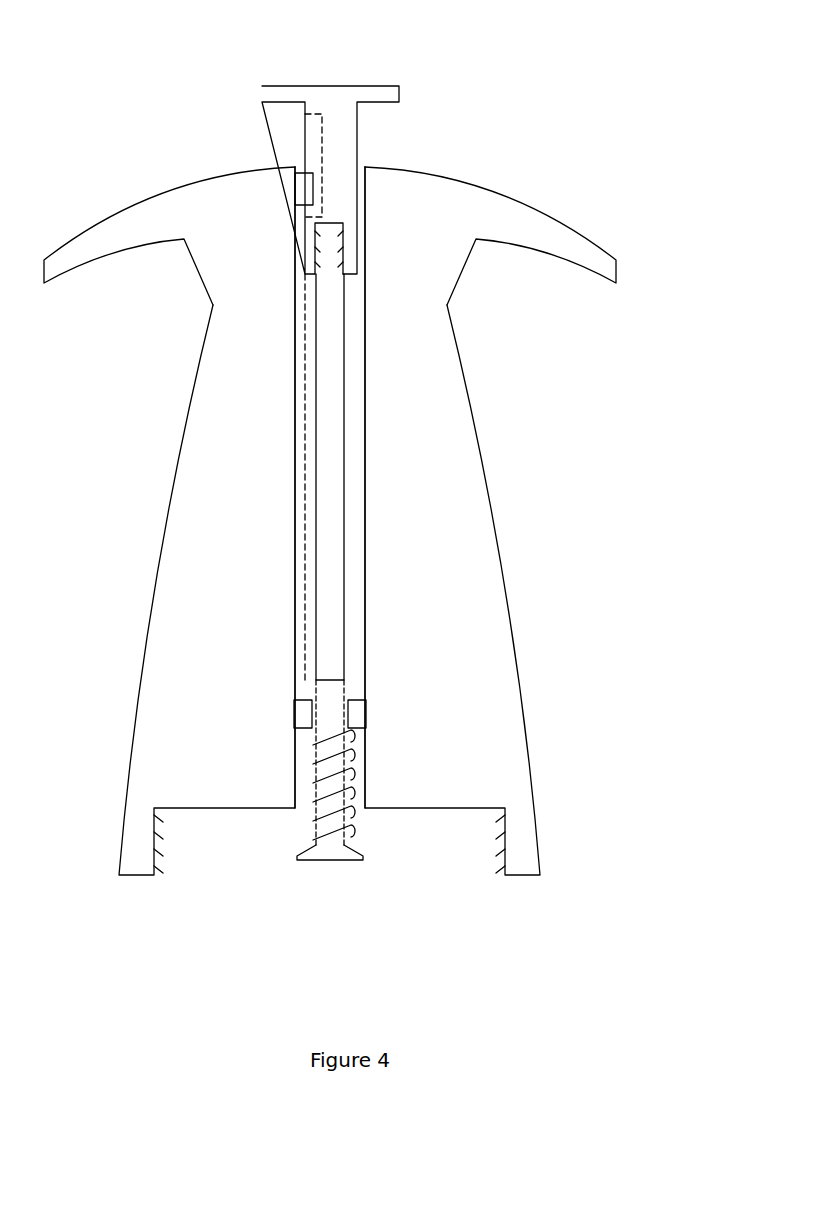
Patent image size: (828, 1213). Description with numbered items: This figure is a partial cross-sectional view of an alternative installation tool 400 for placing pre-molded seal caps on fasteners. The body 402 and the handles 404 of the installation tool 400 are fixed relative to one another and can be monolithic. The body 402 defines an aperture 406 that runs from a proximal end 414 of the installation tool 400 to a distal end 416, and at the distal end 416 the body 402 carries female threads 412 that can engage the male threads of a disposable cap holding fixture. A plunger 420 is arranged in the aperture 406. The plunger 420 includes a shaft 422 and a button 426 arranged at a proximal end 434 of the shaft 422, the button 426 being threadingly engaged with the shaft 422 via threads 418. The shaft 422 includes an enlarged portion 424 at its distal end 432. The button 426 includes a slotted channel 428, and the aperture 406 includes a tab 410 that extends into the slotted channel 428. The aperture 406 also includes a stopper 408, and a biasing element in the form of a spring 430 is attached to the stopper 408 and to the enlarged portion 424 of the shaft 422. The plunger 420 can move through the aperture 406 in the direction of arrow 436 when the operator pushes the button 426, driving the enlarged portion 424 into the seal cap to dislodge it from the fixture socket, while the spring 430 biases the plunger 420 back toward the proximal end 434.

The installation tool 400 is at (642, 388).
The body 402 is at (407, 540).
The handles 404 is at (110, 238).
The aperture 406 is at (367, 460).
The stopper 408 is at (355, 712).
The tab 410 is at (305, 190).
The female threads 412 is at (157, 845).
The proximal end 414 is at (432, 127).
The distal end 416 is at (217, 878).
The threads 418 is at (335, 248).
The plunger 420 is at (349, 603).
The shaft 422 is at (330, 633).
The enlarged portion 424 is at (333, 852).
The button 426 is at (345, 96).
The slotted channel 428 is at (313, 132).
The spring 430 is at (348, 770).
The distal end 432 is at (302, 878).
The proximal end 434 is at (322, 78).
The arrow 436 is at (414, 955).